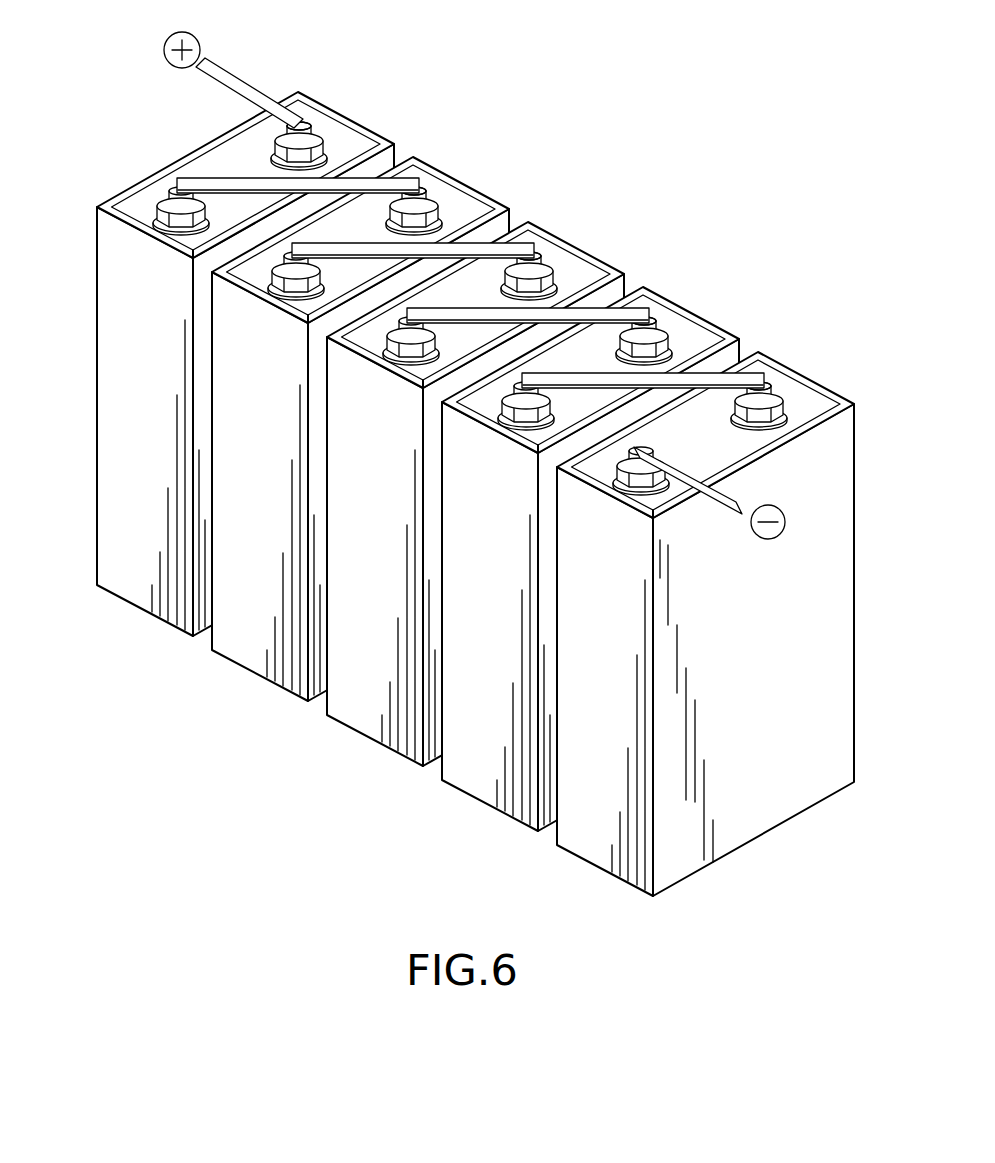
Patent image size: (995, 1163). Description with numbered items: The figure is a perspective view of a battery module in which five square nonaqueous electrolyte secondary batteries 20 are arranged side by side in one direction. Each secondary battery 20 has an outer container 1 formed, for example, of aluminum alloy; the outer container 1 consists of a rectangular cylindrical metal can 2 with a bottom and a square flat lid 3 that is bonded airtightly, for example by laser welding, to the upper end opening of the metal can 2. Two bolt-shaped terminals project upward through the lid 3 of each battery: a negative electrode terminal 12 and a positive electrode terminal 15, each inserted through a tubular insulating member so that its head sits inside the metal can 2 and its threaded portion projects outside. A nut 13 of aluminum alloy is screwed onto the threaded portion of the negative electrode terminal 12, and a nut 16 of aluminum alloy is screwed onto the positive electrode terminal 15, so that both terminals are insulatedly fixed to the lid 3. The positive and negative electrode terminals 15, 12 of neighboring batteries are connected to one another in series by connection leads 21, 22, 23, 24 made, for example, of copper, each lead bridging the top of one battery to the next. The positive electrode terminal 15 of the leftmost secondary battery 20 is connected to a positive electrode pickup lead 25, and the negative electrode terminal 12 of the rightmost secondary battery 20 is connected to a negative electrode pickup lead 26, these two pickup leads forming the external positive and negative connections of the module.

The outer container 1 is at (442, 494).
The metal can 2 is at (108, 265).
The lid 3 is at (455, 310).
The negative electrode terminal 12 is at (133, 212).
The nut 13 is at (184, 218).
The positive electrode terminal 15 is at (305, 125).
The nut 16 is at (272, 152).
The square nonaqueous electrolyte secondary battery 20 is at (536, 251).
The connection lead 21 is at (391, 180).
The connection lead 22 is at (508, 245).
The connection lead 23 is at (624, 310).
The connection lead 24 is at (740, 375).
The positive electrode pickup lead 25 is at (232, 77).
The negative electrode pickup lead 26 is at (716, 504).